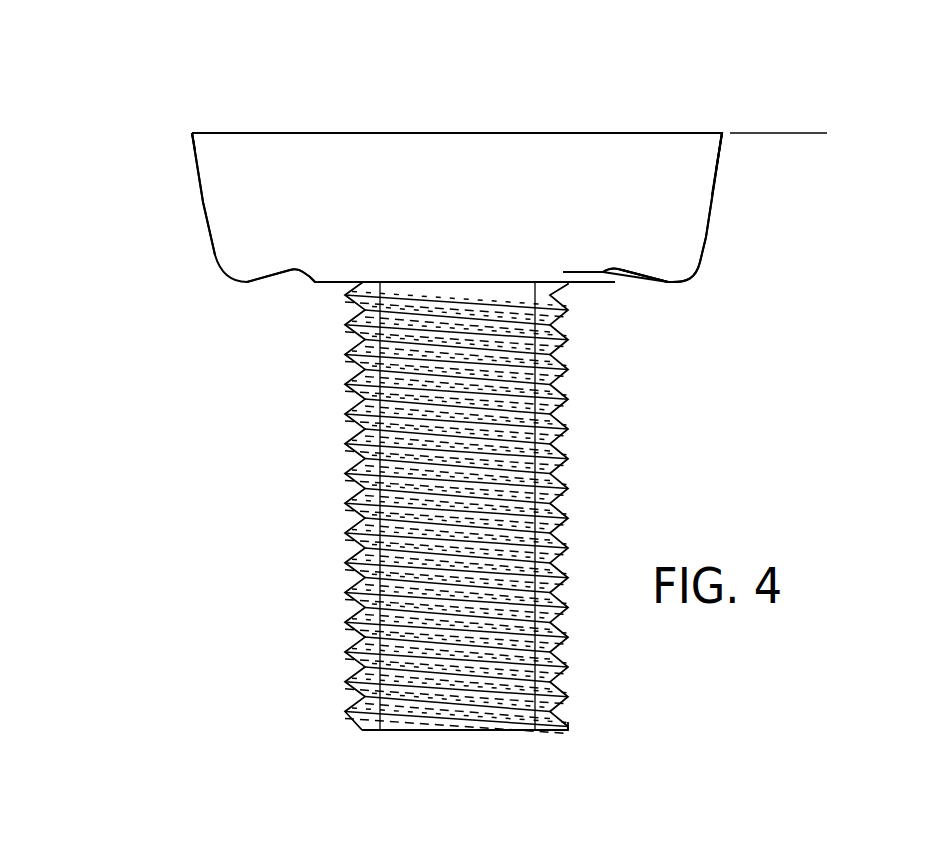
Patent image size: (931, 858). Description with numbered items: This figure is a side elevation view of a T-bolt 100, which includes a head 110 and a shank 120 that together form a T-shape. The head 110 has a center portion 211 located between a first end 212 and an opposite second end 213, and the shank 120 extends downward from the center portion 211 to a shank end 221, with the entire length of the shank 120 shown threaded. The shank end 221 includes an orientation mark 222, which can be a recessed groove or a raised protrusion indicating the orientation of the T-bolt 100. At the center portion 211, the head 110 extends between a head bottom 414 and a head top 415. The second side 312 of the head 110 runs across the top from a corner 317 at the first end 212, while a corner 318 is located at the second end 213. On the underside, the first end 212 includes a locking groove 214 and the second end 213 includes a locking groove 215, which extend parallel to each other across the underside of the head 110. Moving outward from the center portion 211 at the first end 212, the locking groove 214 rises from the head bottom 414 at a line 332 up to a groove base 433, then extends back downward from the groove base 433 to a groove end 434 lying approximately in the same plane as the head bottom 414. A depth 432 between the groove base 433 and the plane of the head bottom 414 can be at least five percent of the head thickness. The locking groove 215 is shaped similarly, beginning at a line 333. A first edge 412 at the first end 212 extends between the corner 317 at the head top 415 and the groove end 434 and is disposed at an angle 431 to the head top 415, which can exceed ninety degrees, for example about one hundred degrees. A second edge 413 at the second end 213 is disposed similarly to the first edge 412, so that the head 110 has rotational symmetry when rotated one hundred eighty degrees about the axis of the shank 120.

The T-bolt 100 is at (393, 101).
The head 110 is at (163, 151).
The shank 120 is at (324, 566).
The center portion 211 is at (487, 115).
The first end 212 is at (659, 112).
The second end 213 is at (242, 117).
The locking groove 214 is at (653, 308).
The locking groove 215 is at (279, 293).
The shank end 221 is at (520, 731).
The orientation mark 222 is at (457, 731).
The second side 312 is at (688, 145).
The corner 317 is at (800, 185).
The corner 318 is at (192, 133).
The line 332 is at (592, 282).
The line 333 is at (308, 283).
The first edge 412 is at (707, 238).
The second edge 413 is at (203, 202).
The head bottom 414 is at (338, 282).
The head top 415 is at (568, 133).
The angle 431 is at (720, 223).
The depth 432 is at (580, 307).
The groove base 433 is at (620, 270).
The groove end 434 is at (668, 283).